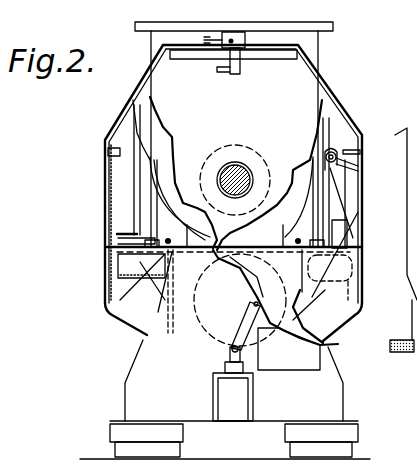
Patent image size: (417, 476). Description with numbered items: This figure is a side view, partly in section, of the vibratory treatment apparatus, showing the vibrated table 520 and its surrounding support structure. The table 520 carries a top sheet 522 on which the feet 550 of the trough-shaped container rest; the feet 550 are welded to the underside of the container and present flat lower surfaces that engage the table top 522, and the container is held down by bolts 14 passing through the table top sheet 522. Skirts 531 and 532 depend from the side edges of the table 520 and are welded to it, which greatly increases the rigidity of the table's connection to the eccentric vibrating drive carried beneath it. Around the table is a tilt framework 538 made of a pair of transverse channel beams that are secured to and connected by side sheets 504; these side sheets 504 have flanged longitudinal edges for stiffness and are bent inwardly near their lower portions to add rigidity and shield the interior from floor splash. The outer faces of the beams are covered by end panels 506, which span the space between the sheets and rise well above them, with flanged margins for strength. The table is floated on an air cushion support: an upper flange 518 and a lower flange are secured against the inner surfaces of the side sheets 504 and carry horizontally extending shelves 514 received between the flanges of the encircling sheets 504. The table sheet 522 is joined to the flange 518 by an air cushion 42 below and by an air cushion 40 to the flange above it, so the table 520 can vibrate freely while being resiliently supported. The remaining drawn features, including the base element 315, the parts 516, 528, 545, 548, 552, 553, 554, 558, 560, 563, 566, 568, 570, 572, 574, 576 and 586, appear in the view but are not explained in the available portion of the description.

The bolts 14 is at (117, 253).
The air cushion 40 is at (118, 238).
The air cushion 42 is at (128, 272).
The base foot 315 is at (113, 456).
The side sheets 504 is at (118, 238).
The end panels 506 is at (330, 82).
The shelves 514 is at (108, 291).
The lower bracket 516 is at (352, 258).
The upper flange 518 is at (363, 308).
The table 520 is at (118, 306).
The table top sheet 522 is at (260, 262).
The actuator cylinder 528 is at (260, 303).
The skirt 531 is at (152, 336).
The skirt 532 is at (330, 302).
The tilt framework 538 is at (104, 182).
The side plate 545 is at (127, 170).
The inner plate 548 is at (320, 118).
The feet 550 is at (133, 130).
The left guide arc 552 is at (167, 230).
The right guide arc 553 is at (262, 228).
The roller 554 is at (333, 152).
The roller arm 558 is at (340, 165).
The housing rail 560 is at (320, 64).
The top plate 563 is at (157, 62).
The link arm 566 is at (325, 205).
The clamp bracket 568 is at (106, 152).
The stop bar 570 is at (361, 152).
The latch piece 572 is at (226, 64).
The cross bar 574 is at (240, 70).
The hanger 576 is at (230, 72).
The side pad 586 is at (392, 352).